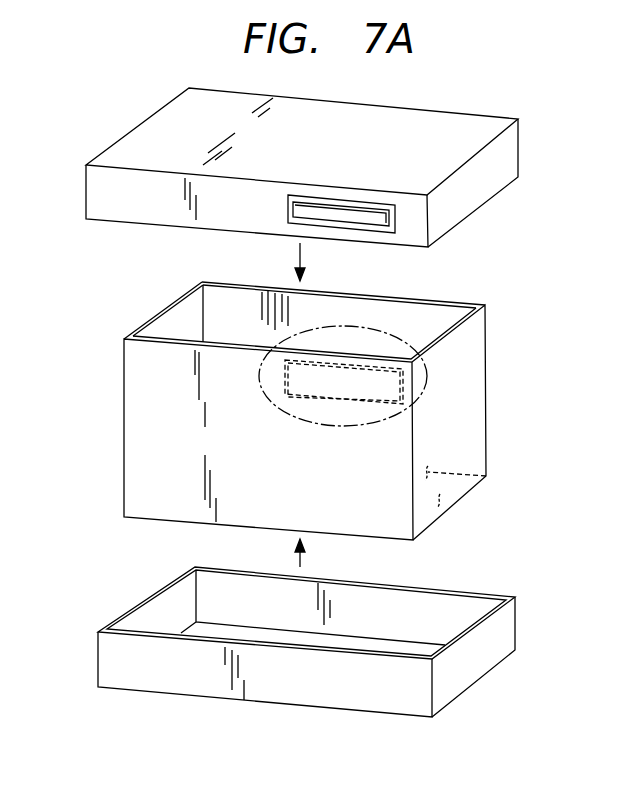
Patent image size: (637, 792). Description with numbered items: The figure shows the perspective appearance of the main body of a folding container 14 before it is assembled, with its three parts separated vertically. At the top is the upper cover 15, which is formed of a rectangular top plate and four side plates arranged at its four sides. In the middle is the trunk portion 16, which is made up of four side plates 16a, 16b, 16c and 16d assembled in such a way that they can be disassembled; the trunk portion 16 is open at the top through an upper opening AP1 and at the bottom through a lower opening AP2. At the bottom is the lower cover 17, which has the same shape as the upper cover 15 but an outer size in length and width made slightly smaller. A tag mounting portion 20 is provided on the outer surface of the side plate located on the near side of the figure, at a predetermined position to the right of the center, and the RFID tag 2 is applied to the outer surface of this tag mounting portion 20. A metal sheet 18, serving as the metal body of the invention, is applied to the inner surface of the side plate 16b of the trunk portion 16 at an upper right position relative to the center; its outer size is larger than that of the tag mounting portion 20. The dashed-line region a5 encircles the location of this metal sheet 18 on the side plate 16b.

The folding container 14 is at (494, 293).
The upper cover 15 is at (325, 187).
The RFID tag 2 is at (342, 222).
The tag mounting portion 20 is at (384, 233).
The trunk portion 16 is at (301, 389).
The side plate 16a is at (468, 400).
The side plate 16b is at (153, 401).
The side plate 16c is at (161, 313).
The side plate 16d is at (249, 283).
The upper opening AP1 is at (442, 314).
The lower opening AP2 is at (444, 503).
The metal sheet 18 is at (288, 397).
The region a5 is at (331, 427).
The lower cover 17 is at (468, 673).